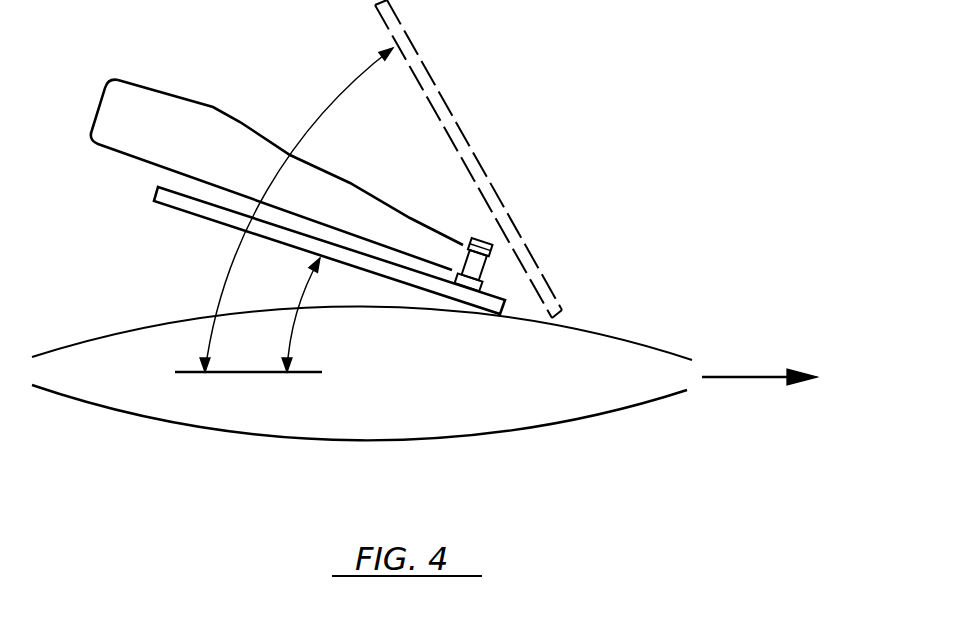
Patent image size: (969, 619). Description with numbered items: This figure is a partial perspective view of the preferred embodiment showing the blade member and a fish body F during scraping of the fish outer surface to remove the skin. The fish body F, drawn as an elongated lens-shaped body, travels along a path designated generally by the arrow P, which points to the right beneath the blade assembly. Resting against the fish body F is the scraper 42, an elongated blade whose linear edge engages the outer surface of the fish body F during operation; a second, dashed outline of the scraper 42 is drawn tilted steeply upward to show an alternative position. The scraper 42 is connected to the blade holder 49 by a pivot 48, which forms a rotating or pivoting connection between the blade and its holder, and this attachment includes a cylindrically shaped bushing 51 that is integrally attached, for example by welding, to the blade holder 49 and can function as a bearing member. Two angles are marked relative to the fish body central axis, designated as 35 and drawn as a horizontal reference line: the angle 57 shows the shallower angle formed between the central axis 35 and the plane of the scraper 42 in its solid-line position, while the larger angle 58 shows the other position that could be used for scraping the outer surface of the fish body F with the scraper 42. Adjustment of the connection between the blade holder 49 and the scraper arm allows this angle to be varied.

The fish body central axis 35 is at (242, 373).
The scraper 42 is at (185, 207).
The pivot 48 is at (477, 260).
The blade holder 49 is at (190, 149).
The bushing 51 is at (477, 232).
The angle 57 is at (297, 320).
The angle 58 is at (338, 97).
The fish body F is at (617, 332).
The arrow P is at (727, 377).